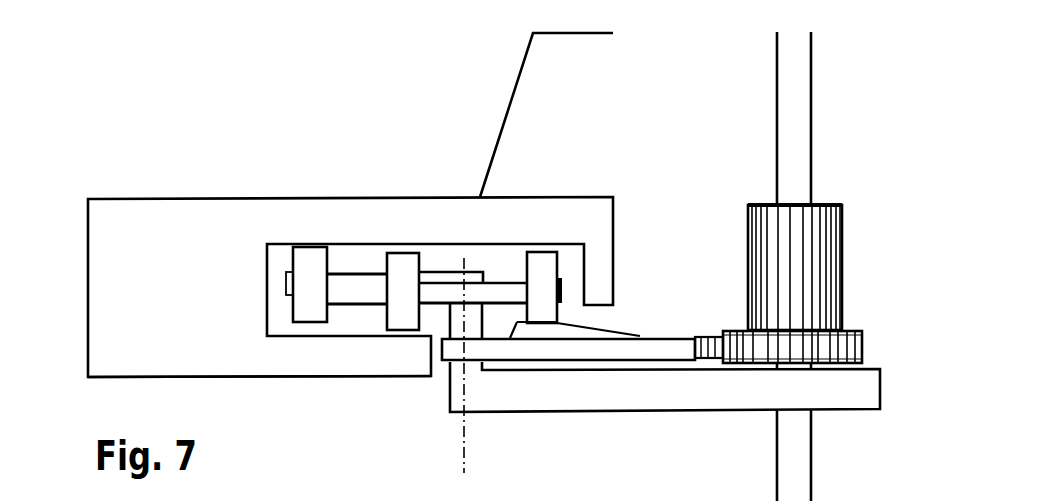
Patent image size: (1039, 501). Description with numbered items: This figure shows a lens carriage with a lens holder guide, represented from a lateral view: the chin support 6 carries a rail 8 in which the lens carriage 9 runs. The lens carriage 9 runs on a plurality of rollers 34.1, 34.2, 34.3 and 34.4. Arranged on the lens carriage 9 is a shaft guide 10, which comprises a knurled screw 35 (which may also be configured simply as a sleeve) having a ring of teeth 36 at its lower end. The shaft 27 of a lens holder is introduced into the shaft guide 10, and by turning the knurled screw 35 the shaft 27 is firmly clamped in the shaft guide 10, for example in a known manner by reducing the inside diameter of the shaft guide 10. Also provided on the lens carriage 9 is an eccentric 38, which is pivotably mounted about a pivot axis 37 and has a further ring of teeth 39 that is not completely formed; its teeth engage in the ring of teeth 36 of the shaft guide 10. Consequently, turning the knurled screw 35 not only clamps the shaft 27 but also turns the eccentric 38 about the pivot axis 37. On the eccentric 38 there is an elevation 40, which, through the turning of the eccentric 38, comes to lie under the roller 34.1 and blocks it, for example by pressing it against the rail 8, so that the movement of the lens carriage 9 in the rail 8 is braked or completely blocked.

The chin support 6 is at (93, 271).
The rail 8 is at (362, 394).
The lens carriage 9 is at (626, 412).
The shaft guide 10 is at (857, 280).
The shaft 27 is at (813, 142).
The roller 34.1 is at (530, 250).
The roller 34.2 is at (402, 251).
The roller 34.3 is at (313, 247).
The roller 34.4 is at (243, 229).
The knurled screw 35 is at (843, 231).
The ring of teeth 36 is at (863, 343).
The pivot axis 37 is at (463, 465).
The eccentric 38 is at (657, 338).
The further ring of teeth 39 is at (703, 335).
The elevation 40 is at (548, 333).